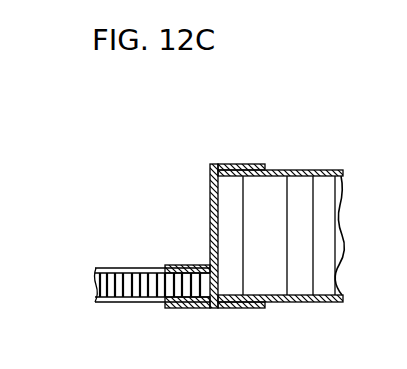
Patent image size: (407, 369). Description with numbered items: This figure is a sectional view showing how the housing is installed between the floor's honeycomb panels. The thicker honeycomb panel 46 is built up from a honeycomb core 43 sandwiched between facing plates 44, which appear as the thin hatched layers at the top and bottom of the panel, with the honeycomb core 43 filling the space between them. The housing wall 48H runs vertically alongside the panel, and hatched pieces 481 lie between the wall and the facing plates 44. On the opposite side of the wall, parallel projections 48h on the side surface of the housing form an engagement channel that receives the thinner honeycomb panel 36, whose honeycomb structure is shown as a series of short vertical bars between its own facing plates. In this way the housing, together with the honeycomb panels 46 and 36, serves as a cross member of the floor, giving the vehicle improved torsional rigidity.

The honeycomb panel 36 is at (95, 287).
The honeycomb core 43 is at (337, 240).
The facing plates 44 is at (308, 170).
The thicker honeycomb panel 46 is at (337, 200).
The housing wall 48H is at (210, 200).
The parallel projections 48h is at (178, 308).
The insulating piece 481 is at (257, 164).